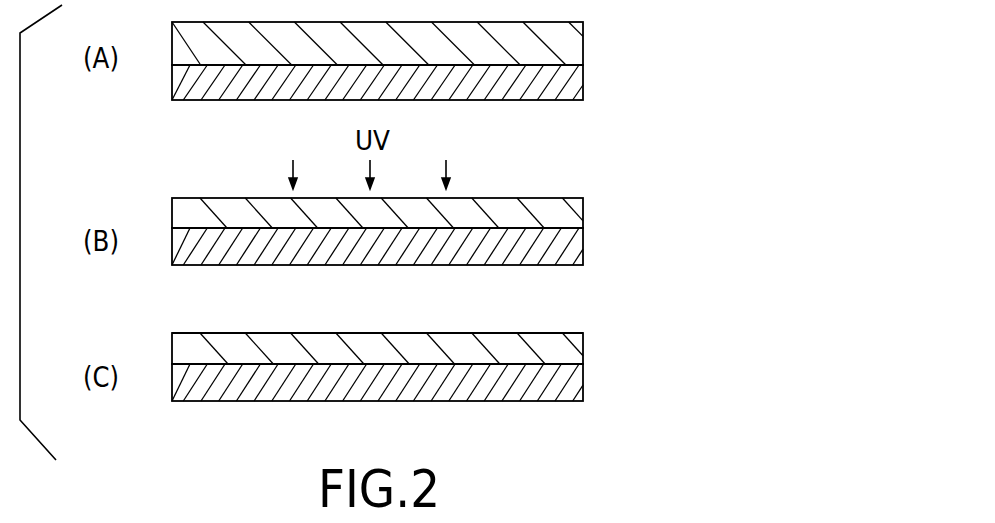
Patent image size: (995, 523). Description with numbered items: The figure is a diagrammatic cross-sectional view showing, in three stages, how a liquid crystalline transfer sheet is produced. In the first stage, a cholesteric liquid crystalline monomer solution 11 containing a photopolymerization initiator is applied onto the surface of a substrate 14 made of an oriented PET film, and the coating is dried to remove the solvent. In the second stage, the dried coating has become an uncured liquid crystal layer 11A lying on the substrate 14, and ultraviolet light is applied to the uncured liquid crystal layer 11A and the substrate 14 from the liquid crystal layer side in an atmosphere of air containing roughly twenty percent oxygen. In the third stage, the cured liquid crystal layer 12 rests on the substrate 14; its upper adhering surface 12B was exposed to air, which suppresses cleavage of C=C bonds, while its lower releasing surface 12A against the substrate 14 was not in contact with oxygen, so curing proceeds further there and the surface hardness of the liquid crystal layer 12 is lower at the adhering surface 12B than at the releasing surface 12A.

The cholesteric liquid crystalline monomer solution 11 is at (563, 43).
The substrate 14 is at (577, 78).
The uncured liquid crystal layer 11A is at (563, 213).
The cured liquid crystal layer 12 is at (565, 350).
The adhering surface 12B is at (520, 333).
The releasing surface 12A is at (480, 357).